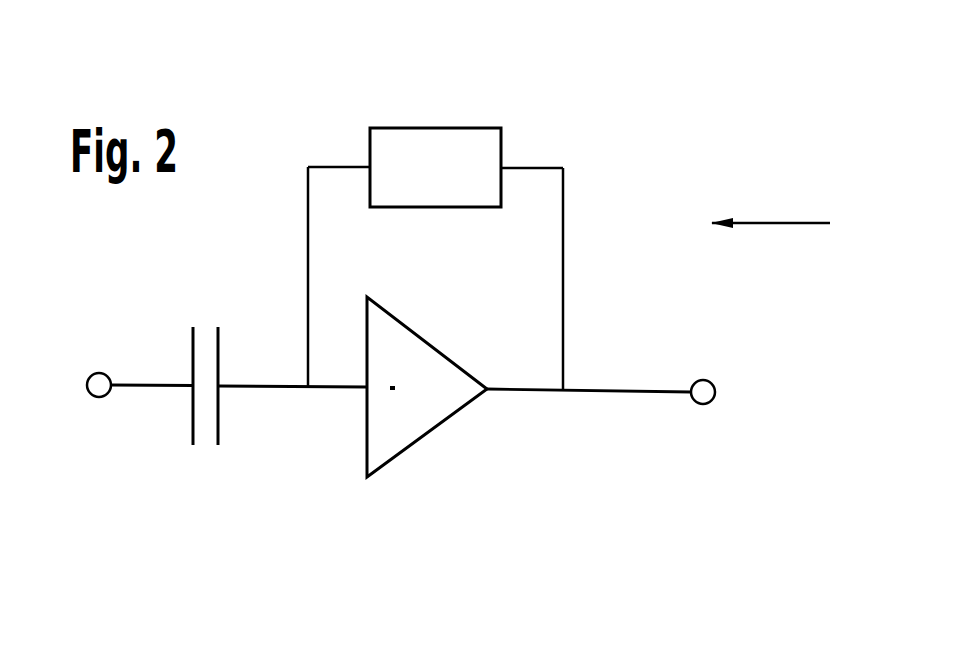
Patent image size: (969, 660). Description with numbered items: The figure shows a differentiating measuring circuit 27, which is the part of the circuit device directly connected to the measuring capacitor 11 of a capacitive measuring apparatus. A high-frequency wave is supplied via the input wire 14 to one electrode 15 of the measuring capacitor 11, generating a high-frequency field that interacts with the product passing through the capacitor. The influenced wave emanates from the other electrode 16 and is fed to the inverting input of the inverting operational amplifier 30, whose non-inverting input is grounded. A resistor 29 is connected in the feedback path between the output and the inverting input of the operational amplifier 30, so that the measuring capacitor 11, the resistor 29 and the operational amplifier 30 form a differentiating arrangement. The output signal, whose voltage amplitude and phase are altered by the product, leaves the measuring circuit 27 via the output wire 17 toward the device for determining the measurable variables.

The measuring capacitor 11 is at (203, 409).
The input wire 14 is at (150, 385).
The electrode 15 is at (192, 353).
The other electrode 16 is at (220, 417).
The output wire 17 is at (645, 393).
The measuring circuit 27 is at (785, 223).
The resistor 29 is at (434, 128).
The inverting operational amplifier 30 is at (420, 440).